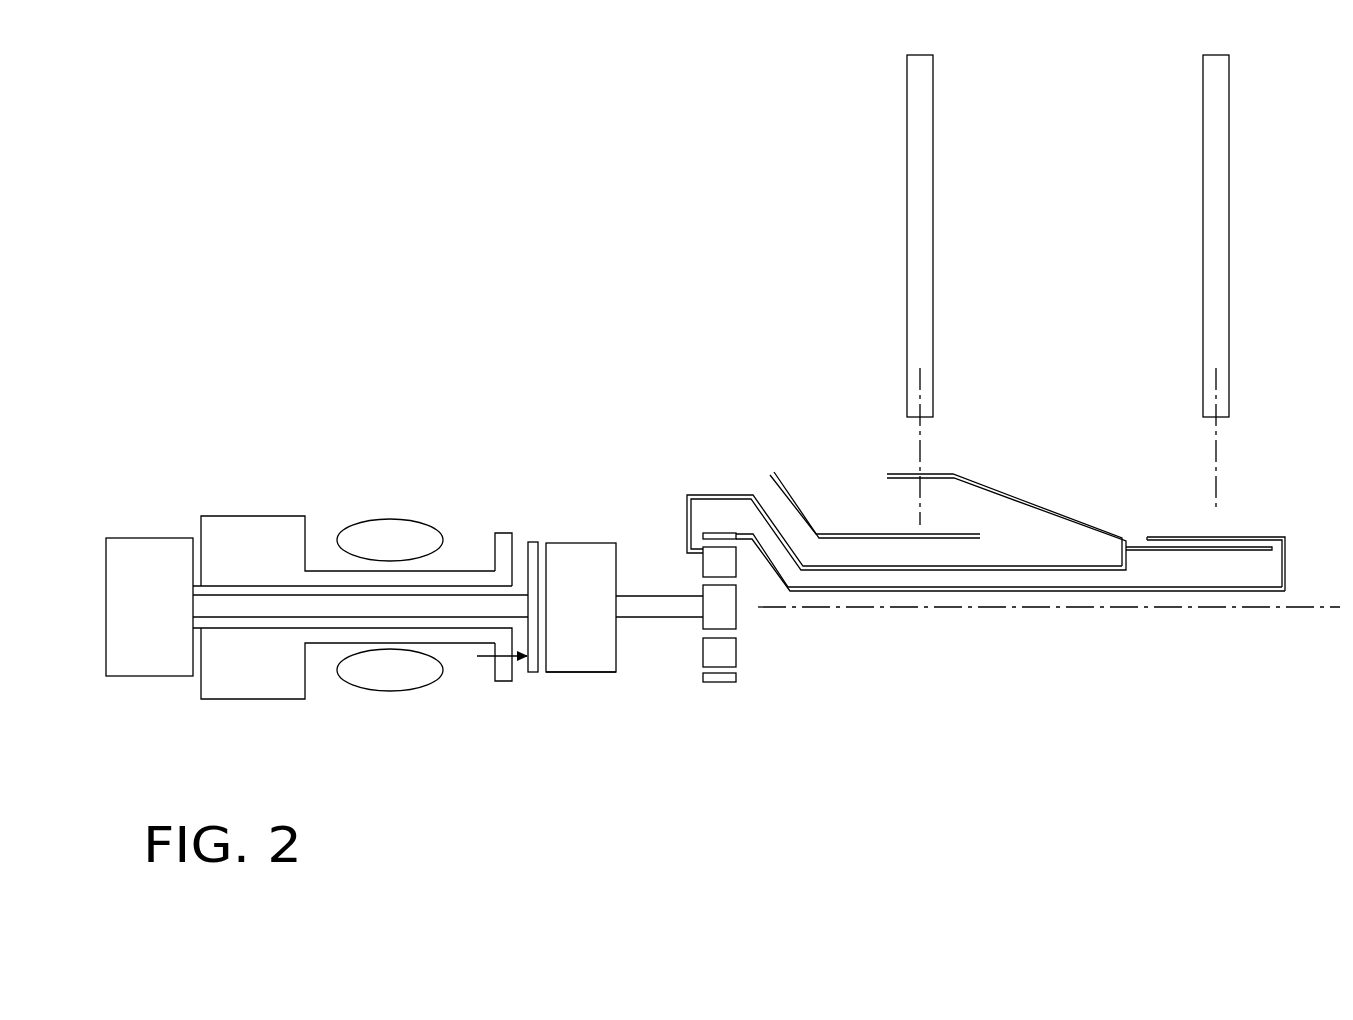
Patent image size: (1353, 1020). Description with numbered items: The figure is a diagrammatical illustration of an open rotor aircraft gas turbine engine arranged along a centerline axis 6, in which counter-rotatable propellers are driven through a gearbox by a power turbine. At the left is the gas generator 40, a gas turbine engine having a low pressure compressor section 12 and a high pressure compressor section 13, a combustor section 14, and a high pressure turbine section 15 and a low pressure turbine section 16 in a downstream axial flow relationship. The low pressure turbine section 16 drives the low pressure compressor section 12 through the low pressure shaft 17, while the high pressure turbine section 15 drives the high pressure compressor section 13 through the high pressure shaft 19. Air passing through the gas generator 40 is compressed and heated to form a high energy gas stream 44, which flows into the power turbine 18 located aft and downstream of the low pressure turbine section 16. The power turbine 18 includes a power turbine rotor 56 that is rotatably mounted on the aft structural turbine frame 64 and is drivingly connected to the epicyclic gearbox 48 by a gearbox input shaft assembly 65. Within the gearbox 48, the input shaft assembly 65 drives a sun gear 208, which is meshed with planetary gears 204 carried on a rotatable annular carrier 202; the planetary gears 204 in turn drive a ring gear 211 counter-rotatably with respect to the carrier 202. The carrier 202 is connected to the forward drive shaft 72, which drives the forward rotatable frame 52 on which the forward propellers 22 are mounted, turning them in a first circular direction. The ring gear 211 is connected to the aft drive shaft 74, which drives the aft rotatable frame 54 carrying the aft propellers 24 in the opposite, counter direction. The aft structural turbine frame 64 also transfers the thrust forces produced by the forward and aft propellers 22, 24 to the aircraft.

The centerline axis 6 is at (1172, 607).
The low pressure compressor section 12 is at (148, 537).
The high pressure compressor section 13 is at (258, 512).
The combustor section 14 is at (385, 692).
The high pressure turbine section 15 is at (505, 533).
The low pressure turbine section 16 is at (533, 542).
The low pressure shaft 17 is at (260, 620).
The power turbine 18 is at (598, 543).
The high pressure shaft 19 is at (318, 584).
The forward propellers 22 is at (933, 198).
The aft propellers 24 is at (1229, 195).
The gas generator 40 is at (440, 482).
The high energy gas stream 44 is at (500, 657).
The epicyclic gearbox 48 is at (730, 696).
The forward rotatable frame 52 is at (977, 482).
The aft rotatable frame 54 is at (1255, 537).
The power turbine rotor 56 is at (590, 672).
The aft structural turbine frame 64 is at (783, 490).
The gearbox input shaft assembly 65 is at (632, 617).
The forward drive shaft 72 is at (890, 568).
The aft drive shaft 74 is at (985, 592).
The annular carrier 202 is at (686, 520).
The planetary gears 204 is at (736, 645).
The sun gear 208 is at (736, 612).
The ring gear 211 is at (736, 677).